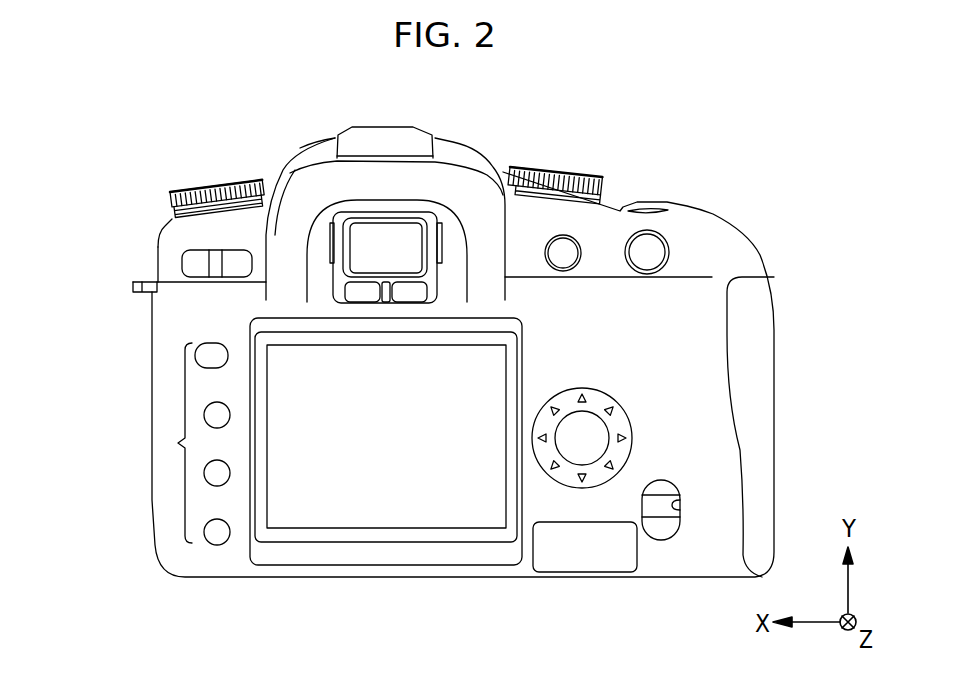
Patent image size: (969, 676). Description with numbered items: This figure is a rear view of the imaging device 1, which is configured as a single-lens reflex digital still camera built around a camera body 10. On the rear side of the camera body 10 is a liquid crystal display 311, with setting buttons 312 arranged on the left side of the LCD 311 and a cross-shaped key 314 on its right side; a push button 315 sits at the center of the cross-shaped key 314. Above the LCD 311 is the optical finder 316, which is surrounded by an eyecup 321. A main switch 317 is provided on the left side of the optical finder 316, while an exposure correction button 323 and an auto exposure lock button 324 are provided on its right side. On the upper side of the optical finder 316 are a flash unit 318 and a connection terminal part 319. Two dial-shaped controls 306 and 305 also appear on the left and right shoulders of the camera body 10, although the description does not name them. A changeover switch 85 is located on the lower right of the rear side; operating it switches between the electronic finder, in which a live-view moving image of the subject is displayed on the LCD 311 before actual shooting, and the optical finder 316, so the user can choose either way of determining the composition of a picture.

The imaging device 1 is at (114, 101).
The camera body 10 is at (174, 178).
The changeover switch 85 is at (662, 532).
The rear control dial 305 is at (553, 173).
The mode setting dial 306 is at (214, 188).
The liquid crystal display 311 is at (378, 512).
The setting buttons 312 is at (178, 444).
The cross-shaped key 314 is at (597, 393).
The push button 315 is at (597, 428).
The optical finder 316 is at (409, 237).
The main switch 317 is at (182, 264).
The flash unit 318 is at (323, 142).
The connection terminal part 319 is at (377, 124).
The eyecup 321 is at (312, 185).
The exposure correction button 323 is at (570, 246).
The auto exposure lock button 324 is at (652, 247).